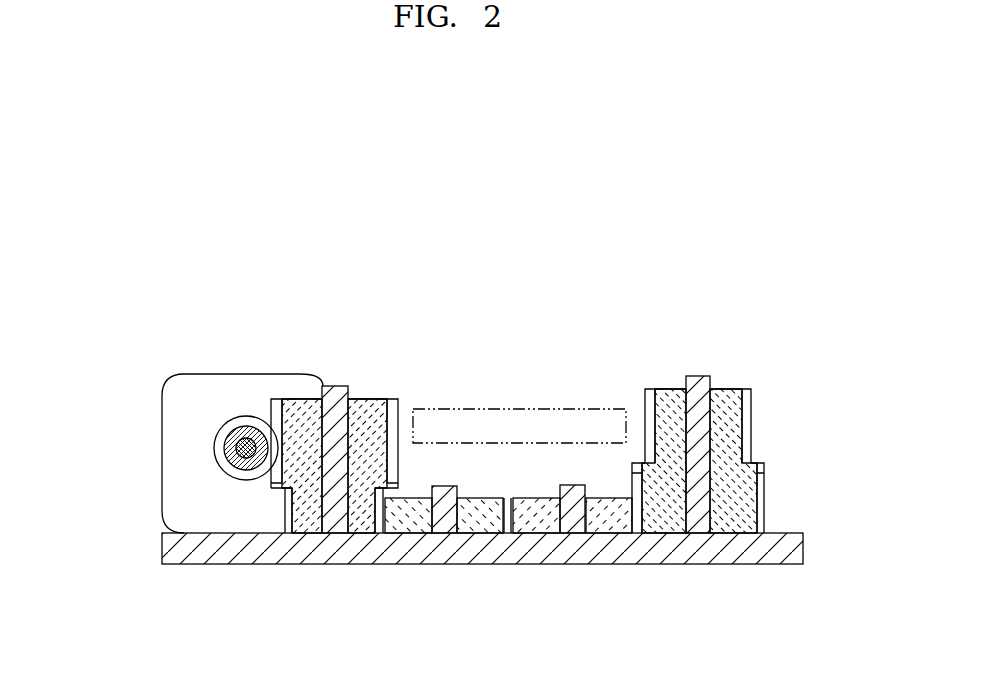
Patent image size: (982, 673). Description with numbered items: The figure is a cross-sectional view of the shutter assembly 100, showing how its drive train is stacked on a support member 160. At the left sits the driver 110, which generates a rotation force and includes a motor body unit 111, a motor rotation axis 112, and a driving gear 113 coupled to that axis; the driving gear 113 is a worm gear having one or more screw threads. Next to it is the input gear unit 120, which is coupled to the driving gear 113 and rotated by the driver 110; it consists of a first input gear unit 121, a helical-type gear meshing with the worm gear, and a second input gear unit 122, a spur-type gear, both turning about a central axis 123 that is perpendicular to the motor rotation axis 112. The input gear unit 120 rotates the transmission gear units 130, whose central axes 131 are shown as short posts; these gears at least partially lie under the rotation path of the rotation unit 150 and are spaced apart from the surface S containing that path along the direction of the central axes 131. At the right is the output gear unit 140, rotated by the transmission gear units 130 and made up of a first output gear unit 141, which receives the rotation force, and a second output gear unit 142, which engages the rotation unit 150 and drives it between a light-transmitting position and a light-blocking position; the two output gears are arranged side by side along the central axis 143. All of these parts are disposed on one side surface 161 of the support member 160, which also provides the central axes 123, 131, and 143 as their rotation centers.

The shutter assembly 100 is at (654, 289).
The driver 110 is at (189, 453).
The motor body unit 111 is at (165, 422).
The motor rotation axis 112 is at (240, 448).
The driving gear 113 is at (224, 462).
The input gear unit 120 is at (334, 482).
The first input gear unit 121 is at (307, 473).
The second input gear unit 122 is at (361, 518).
The central axis of the input gear unit 123 is at (337, 391).
The transmission gear units 130 is at (538, 523).
The central axes of the transmission gear units 131 is at (572, 488).
The output gear unit 140 is at (723, 421).
The first output gear unit 141 is at (746, 490).
The second output gear unit 142 is at (728, 395).
The central axis of the output gear unit 143 is at (698, 380).
The rotation unit 150 is at (577, 409).
The support member 160 is at (408, 548).
The one side surface of the support member 161 is at (251, 517).